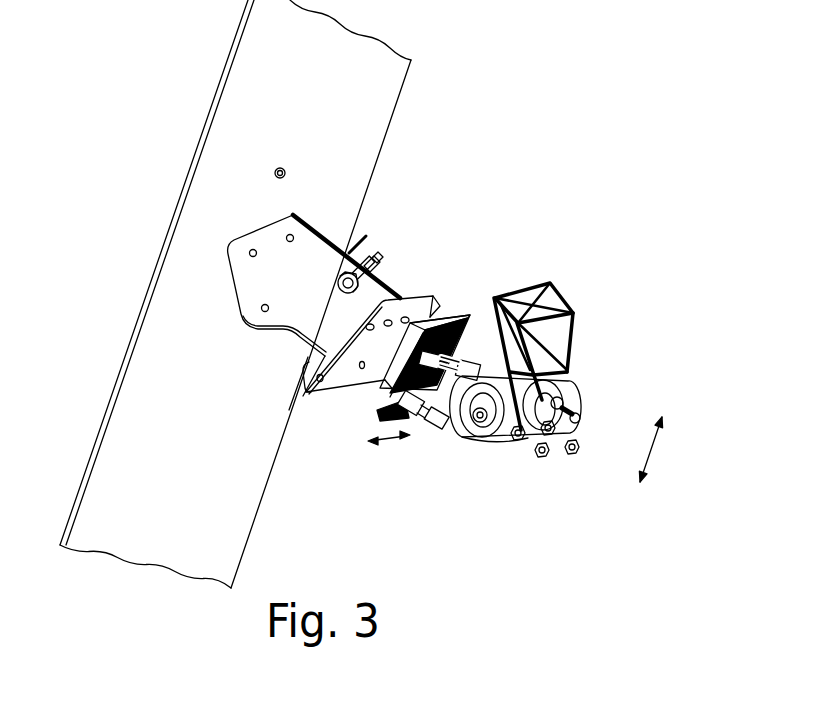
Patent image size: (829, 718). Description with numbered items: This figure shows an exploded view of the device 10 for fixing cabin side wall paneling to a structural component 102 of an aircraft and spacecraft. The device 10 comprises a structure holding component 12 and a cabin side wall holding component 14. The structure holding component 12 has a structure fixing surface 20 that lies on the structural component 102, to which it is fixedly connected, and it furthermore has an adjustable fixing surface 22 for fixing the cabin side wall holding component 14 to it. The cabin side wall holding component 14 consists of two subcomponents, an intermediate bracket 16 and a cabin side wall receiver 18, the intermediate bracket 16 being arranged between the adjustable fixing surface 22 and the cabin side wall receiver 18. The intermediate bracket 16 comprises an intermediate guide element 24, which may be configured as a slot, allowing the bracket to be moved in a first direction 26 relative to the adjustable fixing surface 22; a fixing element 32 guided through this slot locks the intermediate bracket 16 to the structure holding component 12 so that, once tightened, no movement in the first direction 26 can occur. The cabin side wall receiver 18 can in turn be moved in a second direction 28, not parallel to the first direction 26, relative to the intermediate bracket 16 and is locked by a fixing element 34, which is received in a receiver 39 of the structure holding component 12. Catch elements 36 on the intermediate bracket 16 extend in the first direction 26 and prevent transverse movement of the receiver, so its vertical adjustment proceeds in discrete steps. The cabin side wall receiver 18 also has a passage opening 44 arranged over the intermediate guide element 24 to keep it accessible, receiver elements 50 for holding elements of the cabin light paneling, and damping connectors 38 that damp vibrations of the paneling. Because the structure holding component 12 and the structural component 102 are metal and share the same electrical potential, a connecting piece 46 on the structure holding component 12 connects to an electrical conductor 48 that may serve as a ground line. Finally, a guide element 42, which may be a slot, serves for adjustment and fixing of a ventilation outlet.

The device 10 is at (586, 238).
The structure holding component 12 is at (347, 253).
The cabin side wall holding component 14 is at (447, 556).
The intermediate bracket 16 is at (458, 323).
The cabin side wall receiver 18 is at (568, 367).
The structure fixing surface 20 is at (277, 332).
The adjustable fixing surface 22 is at (330, 385).
The intermediate guide element 24 is at (368, 424).
The first direction 26 is at (388, 446).
The second direction 28 is at (652, 448).
The fixing element 32 is at (430, 427).
The fixing element 34 is at (402, 357).
The catch elements 36 is at (446, 316).
The damping connectors 38 is at (575, 383).
The receiver 39 is at (353, 310).
The guide element 42 is at (308, 370).
The passage opening 44 is at (495, 437).
The connecting piece 46 is at (377, 273).
The electrical conductor 48 is at (380, 256).
The receiver elements 50 is at (548, 305).
The structural component 102 is at (378, 72).